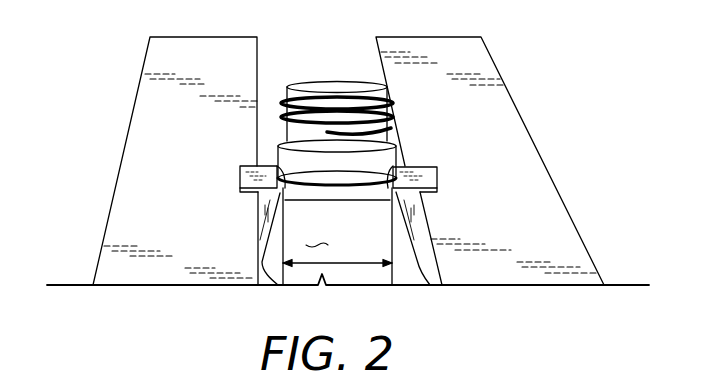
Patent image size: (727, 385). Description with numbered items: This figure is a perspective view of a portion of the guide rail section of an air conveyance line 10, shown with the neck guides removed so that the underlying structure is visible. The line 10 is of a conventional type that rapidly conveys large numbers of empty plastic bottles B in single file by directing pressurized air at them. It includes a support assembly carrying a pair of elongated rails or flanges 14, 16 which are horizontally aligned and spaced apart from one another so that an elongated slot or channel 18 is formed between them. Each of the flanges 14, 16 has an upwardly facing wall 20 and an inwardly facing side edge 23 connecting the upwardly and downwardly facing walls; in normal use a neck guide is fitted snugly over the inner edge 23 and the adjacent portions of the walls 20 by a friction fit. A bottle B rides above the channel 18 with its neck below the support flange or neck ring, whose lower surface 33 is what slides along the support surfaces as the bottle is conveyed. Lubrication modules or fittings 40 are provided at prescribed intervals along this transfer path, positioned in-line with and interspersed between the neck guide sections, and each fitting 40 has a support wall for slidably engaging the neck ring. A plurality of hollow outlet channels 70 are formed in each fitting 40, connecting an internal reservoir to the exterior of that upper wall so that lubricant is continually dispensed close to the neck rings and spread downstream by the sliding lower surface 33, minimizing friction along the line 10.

The air conveyance line 10 is at (614, 62).
The rail or flange 14 is at (213, 250).
The rail or flange 16 is at (531, 193).
The slot or channel 18 is at (348, 268).
The upwardly facing wall 20 is at (218, 207).
The inwardly facing side edge 23 is at (278, 286).
The lower surface of support flange 33 is at (377, 190).
The lubrication module or fitting 40 is at (240, 164).
The outlet channel 70 is at (267, 166).